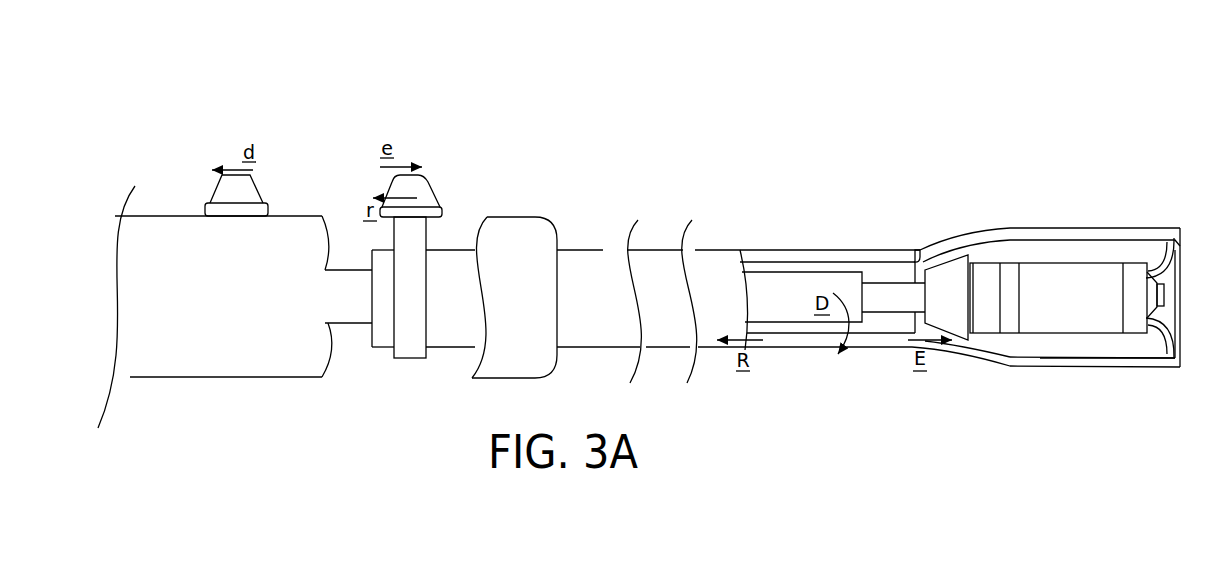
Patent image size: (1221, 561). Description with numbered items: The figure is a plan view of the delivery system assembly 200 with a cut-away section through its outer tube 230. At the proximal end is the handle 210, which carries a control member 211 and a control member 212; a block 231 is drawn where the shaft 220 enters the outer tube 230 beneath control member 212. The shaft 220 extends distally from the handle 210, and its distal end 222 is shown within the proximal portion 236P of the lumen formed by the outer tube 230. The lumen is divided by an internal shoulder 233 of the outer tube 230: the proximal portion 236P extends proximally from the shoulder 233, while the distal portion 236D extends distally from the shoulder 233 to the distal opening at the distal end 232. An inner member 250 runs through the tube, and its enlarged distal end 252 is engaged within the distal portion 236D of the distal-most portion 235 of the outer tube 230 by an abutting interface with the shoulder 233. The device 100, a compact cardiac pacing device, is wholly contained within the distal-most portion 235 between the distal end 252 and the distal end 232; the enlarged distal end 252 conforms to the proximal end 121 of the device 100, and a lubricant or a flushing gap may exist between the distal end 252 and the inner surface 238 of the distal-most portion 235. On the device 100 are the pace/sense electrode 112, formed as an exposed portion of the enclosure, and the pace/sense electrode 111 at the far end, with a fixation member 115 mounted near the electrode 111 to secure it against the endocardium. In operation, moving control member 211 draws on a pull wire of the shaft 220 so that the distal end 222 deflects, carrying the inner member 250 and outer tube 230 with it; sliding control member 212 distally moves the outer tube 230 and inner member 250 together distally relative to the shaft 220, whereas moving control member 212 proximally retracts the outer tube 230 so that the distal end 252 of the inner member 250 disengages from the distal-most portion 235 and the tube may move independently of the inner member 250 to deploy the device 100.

The delivery system assembly 200 is at (305, 105).
The handle 210 is at (257, 404).
The control member 211 is at (212, 200).
The control member 212 is at (437, 190).
The shaft 220 is at (353, 283).
The outer tube 230 is at (458, 338).
The coupling block 231 is at (380, 330).
The distal end of shaft 222 is at (827, 258).
The inner member 250 is at (877, 293).
The internal shoulder 233 is at (933, 250).
The enlarged distal end of inner member 252 is at (955, 252).
The distal-most portion of outer tube 235 is at (1044, 226).
The inner surface of distal-most portion 238 is at (1007, 350).
The proximal portion of lumen 236P is at (888, 328).
The distal portion of lumen 236D is at (1088, 348).
The distal end of outer tube 232 is at (1177, 363).
The device 100 is at (1071, 304).
The proximal end of device 121 is at (978, 268).
The pace/sense electrode 112 is at (1017, 308).
The fixation member 115 is at (1163, 260).
The pace/sense electrode 111 is at (1167, 297).